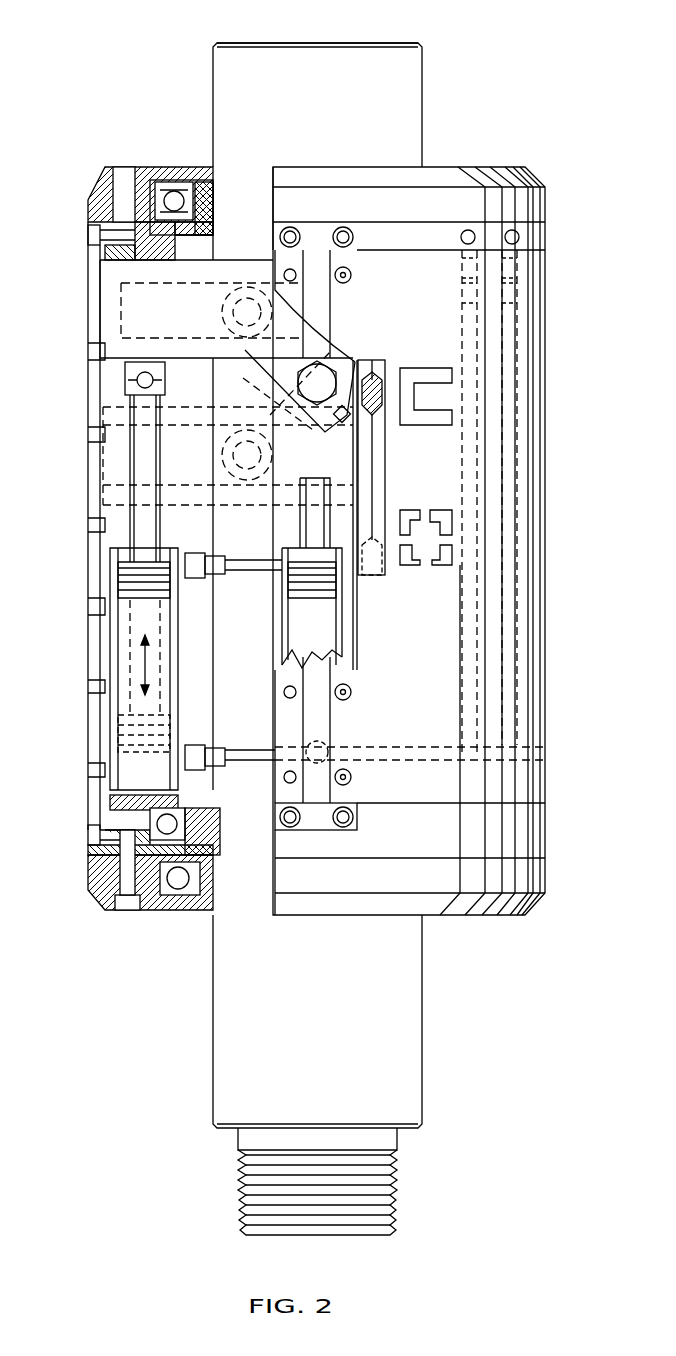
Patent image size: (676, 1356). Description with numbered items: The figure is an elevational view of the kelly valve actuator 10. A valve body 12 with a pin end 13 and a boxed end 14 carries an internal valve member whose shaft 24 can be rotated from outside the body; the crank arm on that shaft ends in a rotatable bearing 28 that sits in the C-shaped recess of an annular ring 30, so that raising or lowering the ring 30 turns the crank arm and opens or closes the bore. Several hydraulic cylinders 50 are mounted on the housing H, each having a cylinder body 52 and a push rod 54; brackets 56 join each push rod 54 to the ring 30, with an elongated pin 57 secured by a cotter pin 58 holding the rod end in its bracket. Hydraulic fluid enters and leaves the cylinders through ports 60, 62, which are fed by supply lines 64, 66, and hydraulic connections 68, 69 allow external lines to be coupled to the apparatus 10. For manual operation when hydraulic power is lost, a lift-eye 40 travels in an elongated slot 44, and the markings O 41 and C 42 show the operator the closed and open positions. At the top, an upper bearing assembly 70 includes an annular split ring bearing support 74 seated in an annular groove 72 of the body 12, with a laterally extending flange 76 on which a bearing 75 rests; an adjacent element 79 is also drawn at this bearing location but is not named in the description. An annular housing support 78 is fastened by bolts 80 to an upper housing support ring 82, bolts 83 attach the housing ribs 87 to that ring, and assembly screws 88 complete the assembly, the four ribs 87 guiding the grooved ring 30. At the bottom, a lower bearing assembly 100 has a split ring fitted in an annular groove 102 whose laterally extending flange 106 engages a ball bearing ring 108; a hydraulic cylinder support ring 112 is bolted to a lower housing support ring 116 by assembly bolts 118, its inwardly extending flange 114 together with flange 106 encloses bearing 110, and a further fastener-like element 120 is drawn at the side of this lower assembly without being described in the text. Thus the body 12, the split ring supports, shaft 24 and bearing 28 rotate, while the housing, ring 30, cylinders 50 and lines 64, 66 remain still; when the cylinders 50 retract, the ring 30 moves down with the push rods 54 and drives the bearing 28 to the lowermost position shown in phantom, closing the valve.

The kelly valve actuator 10 is at (572, 137).
The valve body 12 is at (413, 108).
The pin end 13 is at (242, 1178).
The boxed end 14 is at (377, 42).
The shaft 24 is at (305, 385).
The bearing 28 is at (222, 300).
The annular ring 30 is at (100, 283).
The manual lift-eye 40 is at (375, 370).
The O 41 is at (408, 517).
The C 42 is at (418, 367).
The elongated slot 44 is at (372, 440).
The hydraulic cylinders 50 is at (175, 650).
The cylinder body 52 is at (175, 725).
The push rod 54 is at (160, 458).
The brackets 56 is at (160, 392).
The elongated pin 57 is at (140, 388).
The cotter pin 58 is at (125, 378).
The hydraulic port 60 is at (195, 765).
The hydraulic port 62 is at (192, 570).
The hydraulic fluid supply line 64 is at (520, 410).
The hydraulic fluid supply line 66 is at (480, 355).
The hydraulic connection 68 is at (466, 230).
The hydraulic connection 69 is at (519, 237).
The upper bearing assembly 70 is at (128, 145).
The annular groove 72 is at (213, 200).
The annular split ring bearing support 74 is at (205, 230).
The bearing 75 is at (178, 195).
The laterally extending annular flange 76 is at (185, 236).
The annular housing support 78 is at (470, 167).
The bearing block 79 is at (175, 178).
The bolts 80 is at (125, 166).
The upper housing support ring 82 is at (150, 246).
The bolts 83 is at (90, 233).
The housing ribs 87 is at (100, 253).
The assembly screws 88 is at (93, 438).
The lower bearing assembly 100 is at (152, 925).
The annular groove 102 is at (222, 895).
The laterally extending flange 106 is at (220, 842).
The ball bearing ring 108 is at (178, 892).
The bearing 110 is at (172, 820).
The hydraulic cylinder support ring 112 is at (100, 848).
The inwardly extending flange 114 is at (172, 800).
The lower housing support ring 116 is at (100, 888).
The assembly bolts 118 is at (128, 905).
The screw 120 is at (88, 830).
The housing H is at (545, 662).